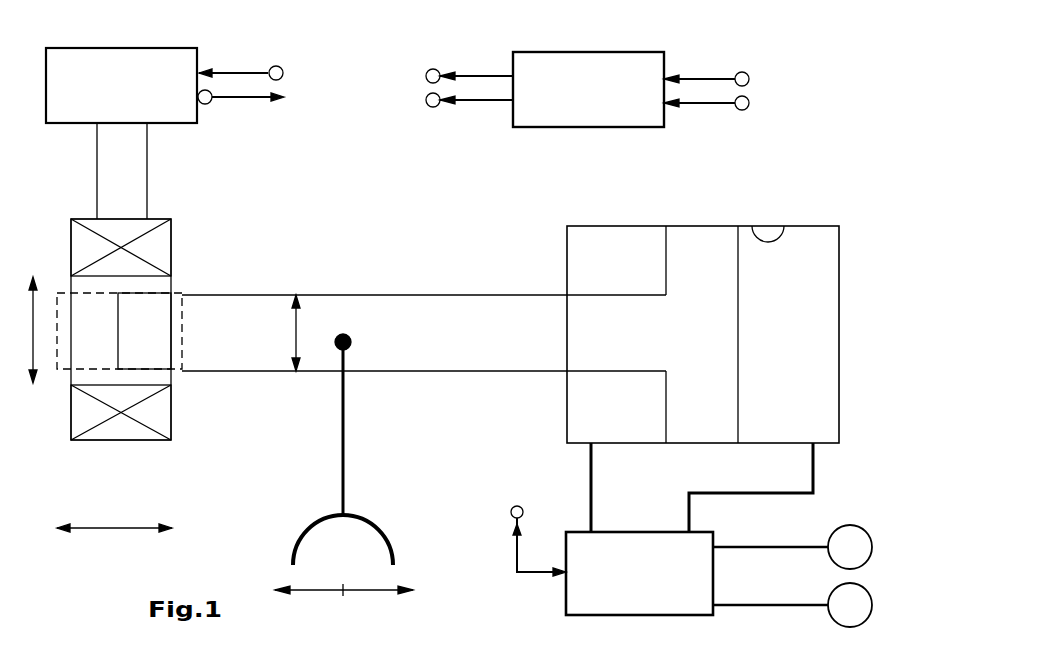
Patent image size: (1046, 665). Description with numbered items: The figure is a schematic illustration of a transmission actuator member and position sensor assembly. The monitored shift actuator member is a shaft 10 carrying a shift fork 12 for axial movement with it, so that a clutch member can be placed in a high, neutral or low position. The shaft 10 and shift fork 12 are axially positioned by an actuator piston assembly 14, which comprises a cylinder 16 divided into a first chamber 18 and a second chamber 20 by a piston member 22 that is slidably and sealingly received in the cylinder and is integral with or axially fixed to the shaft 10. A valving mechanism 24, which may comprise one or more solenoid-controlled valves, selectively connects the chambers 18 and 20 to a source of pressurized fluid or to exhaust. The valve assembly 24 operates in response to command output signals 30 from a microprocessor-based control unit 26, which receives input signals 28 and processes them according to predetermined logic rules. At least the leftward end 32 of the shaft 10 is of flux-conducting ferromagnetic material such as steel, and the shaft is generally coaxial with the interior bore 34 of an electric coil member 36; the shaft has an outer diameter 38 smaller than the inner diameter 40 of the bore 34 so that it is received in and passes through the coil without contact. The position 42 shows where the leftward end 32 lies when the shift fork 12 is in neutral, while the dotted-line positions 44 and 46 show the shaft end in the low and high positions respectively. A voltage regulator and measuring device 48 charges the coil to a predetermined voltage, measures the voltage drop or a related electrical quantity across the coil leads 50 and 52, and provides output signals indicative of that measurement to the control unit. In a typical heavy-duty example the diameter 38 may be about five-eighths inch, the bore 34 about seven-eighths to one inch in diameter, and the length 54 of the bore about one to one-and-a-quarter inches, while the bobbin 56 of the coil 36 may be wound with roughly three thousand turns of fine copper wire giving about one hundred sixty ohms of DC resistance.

The shaft 10 is at (458, 323).
The shift fork 12 is at (343, 455).
The actuator piston assembly 14 is at (671, 294).
The cylinder 16 is at (778, 227).
The first chamber 18 is at (778, 307).
The second chamber 20 is at (583, 270).
The piston member 22 is at (690, 270).
The valving mechanism 24 is at (632, 600).
The microprocessor-based control unit 26 is at (592, 70).
The input signals 28 is at (711, 66).
The command output signals 30 is at (478, 62).
The leftward end 32 is at (169, 356).
The interior bore 34 is at (125, 278).
The electric coil member 36 is at (173, 238).
The outer diameter 38 is at (296, 330).
The inner diameter 40 is at (35, 307).
The neutral position 42 is at (140, 340).
The low position 44 is at (197, 352).
The high position 46 is at (93, 332).
The voltage regulator and measuring device 48 is at (155, 63).
The coil lead 50 is at (147, 192).
The coil lead 52 is at (97, 172).
The length of the bore 54 is at (113, 528).
The bobbin 56 is at (160, 255).